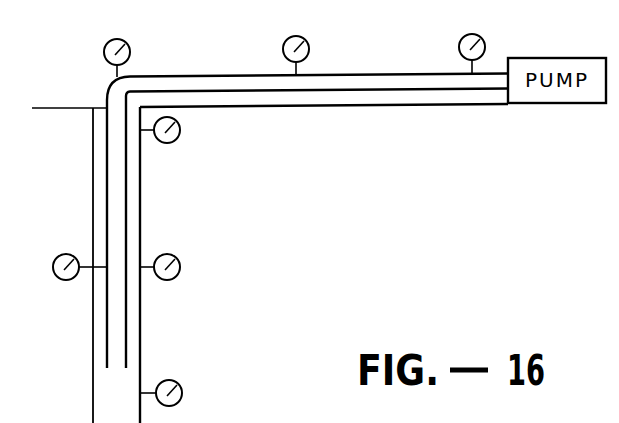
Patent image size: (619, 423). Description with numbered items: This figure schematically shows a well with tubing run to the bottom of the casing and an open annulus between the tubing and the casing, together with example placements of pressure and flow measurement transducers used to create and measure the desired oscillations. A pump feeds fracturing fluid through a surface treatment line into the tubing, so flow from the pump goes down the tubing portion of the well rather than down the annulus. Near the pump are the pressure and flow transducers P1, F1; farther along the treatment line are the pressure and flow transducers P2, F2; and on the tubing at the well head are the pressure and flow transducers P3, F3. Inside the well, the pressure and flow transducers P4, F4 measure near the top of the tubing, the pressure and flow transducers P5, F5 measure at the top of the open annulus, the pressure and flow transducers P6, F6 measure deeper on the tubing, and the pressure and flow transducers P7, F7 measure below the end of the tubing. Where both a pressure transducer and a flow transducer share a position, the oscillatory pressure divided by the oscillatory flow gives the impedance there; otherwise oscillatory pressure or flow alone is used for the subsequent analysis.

The pressure and flow gauge at pump outlet P1, F1 is at (505, 52).
The pressure and flow gauge on surface line P2, F2 is at (332, 54).
The pressure and flow gauge at wellhead P3, F3 is at (153, 56).
The pressure and flow gauge on inner pipe near surface P4, F4 is at (199, 129).
The pressure and flow gauge on casing annulus P5, F5 is at (57, 252).
The pressure and flow gauge on inner pipe mid-depth P6, F6 is at (196, 266).
The pressure and flow gauge below pipe end P7, F7 is at (198, 392).